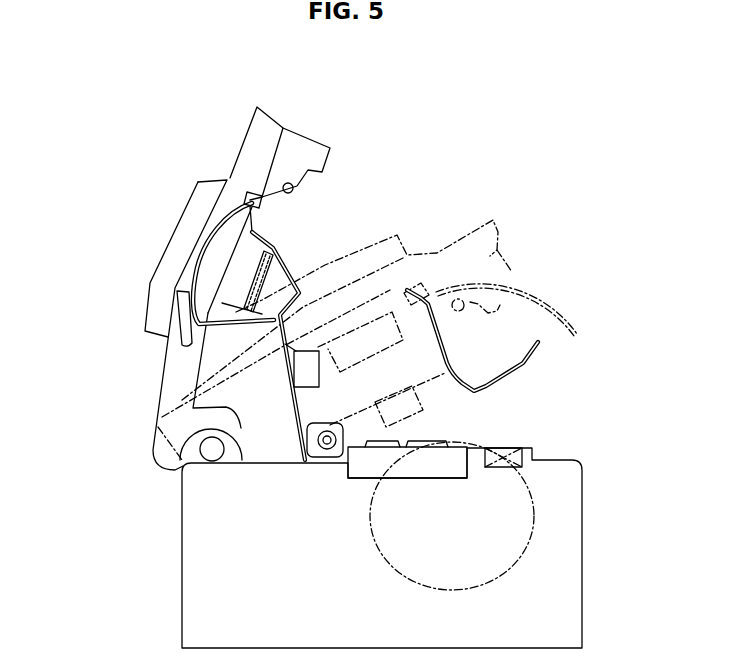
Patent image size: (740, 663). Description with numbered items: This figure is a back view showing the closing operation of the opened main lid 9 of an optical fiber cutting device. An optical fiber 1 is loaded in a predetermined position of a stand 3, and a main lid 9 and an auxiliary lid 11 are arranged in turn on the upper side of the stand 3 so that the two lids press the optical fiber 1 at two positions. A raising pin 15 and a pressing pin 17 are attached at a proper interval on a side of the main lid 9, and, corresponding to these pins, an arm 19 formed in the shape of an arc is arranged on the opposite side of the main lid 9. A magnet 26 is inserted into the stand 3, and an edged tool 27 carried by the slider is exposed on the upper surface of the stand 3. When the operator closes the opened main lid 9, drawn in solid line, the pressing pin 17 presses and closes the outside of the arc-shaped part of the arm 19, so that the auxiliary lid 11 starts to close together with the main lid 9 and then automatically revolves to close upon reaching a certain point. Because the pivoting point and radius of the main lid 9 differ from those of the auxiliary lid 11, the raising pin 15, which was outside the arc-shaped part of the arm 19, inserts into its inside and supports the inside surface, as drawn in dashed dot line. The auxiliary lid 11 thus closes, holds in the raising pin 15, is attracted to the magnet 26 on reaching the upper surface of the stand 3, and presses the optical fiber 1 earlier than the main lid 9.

The optical fiber 1 is at (405, 441).
The stand 3 is at (575, 480).
The main lid 9 is at (199, 186).
The auxiliary lid 11 is at (197, 410).
The raising pin 15 is at (300, 172).
The pressing pin 17 is at (175, 288).
The arm 19 is at (197, 245).
The magnet 26 is at (513, 448).
The edged tool 27 is at (530, 518).